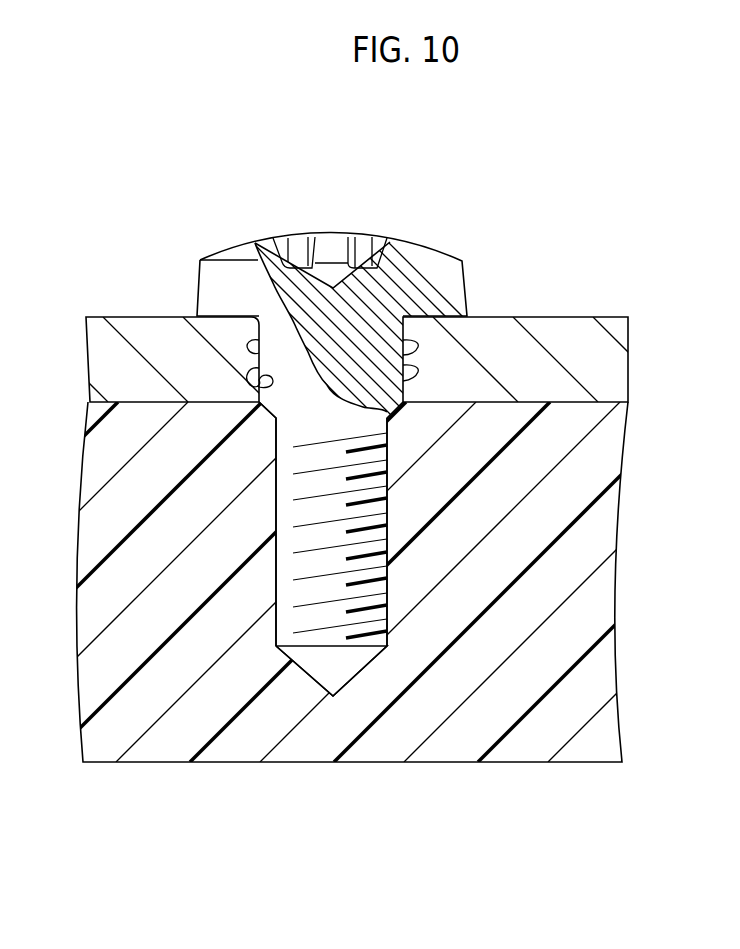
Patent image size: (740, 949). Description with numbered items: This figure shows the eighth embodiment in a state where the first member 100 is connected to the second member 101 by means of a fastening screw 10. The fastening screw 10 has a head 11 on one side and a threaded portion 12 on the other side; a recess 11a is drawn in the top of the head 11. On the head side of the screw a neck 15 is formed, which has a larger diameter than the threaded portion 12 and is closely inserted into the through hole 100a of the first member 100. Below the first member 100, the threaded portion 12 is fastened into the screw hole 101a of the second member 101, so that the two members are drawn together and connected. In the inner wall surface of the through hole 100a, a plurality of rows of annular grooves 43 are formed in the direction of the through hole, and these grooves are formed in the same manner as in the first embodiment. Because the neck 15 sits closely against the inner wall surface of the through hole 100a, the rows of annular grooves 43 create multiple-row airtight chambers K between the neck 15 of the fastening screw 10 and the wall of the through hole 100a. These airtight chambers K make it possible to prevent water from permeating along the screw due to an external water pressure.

The fastening screw 10 is at (318, 438).
The head 11 is at (449, 284).
The driving recess 11a is at (328, 252).
The threaded portion 12 is at (388, 543).
The neck 15 is at (269, 326).
The annular grooves 43 is at (430, 345).
The airtight chambers K is at (426, 328).
The first member 100 is at (106, 358).
The through hole 100a is at (252, 388).
The second member 101 is at (309, 749).
The screw hole 101a is at (296, 500).